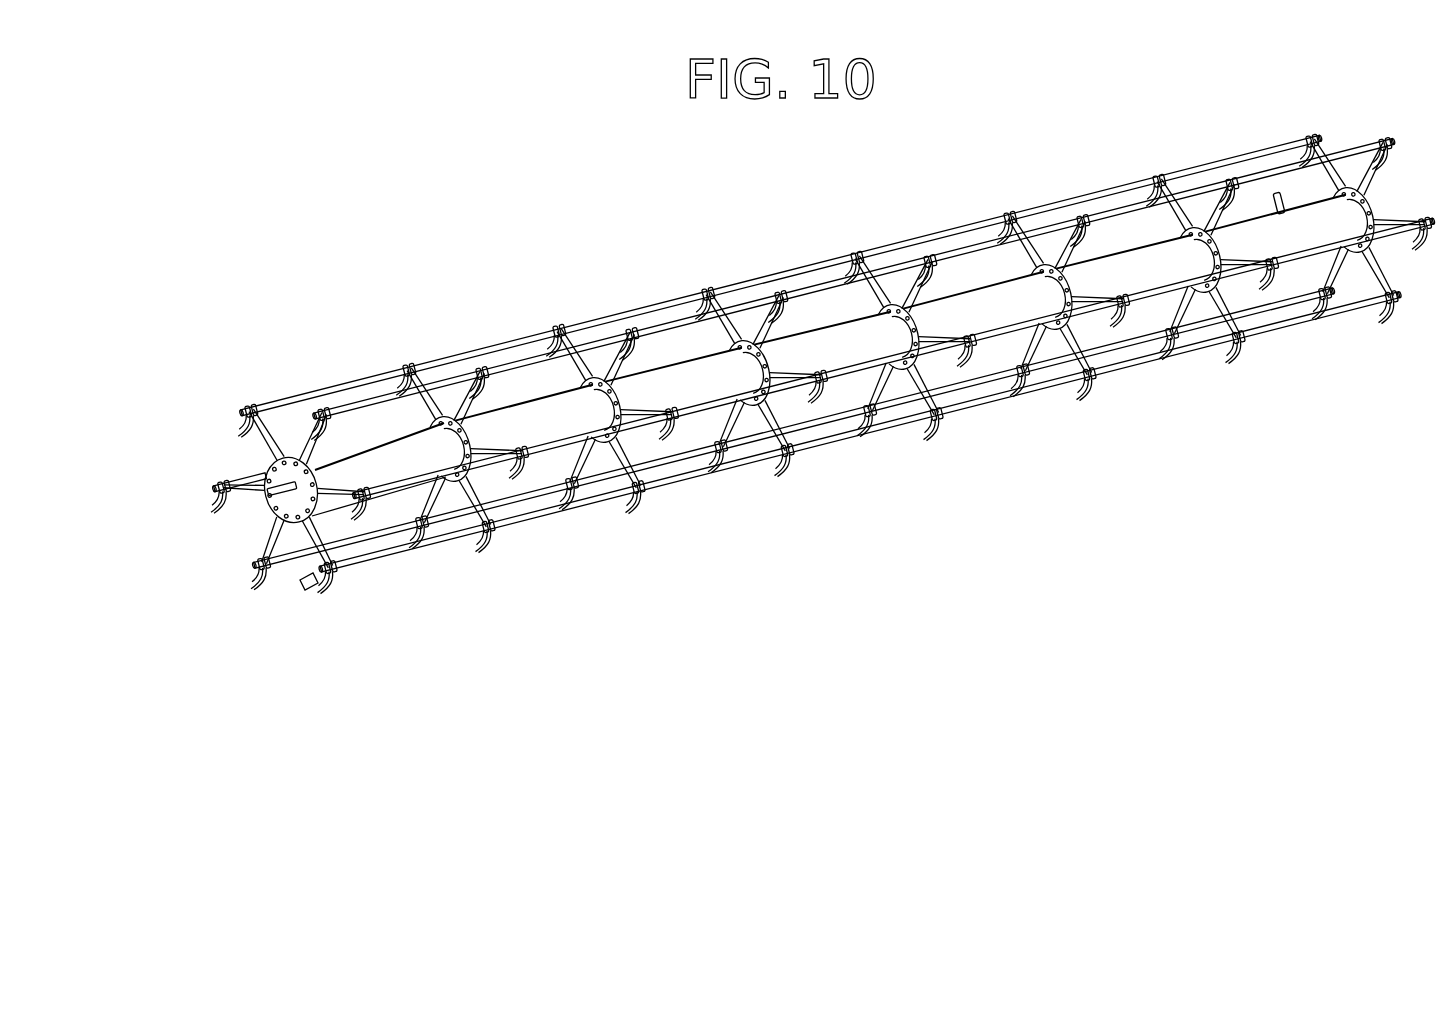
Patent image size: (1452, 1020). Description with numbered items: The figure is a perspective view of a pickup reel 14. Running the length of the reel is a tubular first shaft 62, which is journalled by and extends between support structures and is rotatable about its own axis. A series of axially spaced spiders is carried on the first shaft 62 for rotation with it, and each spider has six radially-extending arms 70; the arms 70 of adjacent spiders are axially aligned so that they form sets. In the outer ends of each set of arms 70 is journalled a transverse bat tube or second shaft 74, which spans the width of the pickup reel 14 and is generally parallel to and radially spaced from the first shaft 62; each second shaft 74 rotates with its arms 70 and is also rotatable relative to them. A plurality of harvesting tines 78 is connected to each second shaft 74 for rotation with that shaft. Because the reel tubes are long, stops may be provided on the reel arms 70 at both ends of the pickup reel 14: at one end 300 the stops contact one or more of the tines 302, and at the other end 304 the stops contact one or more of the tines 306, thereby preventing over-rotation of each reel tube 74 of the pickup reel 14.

The pickup reel 14 is at (798, 391).
The first shaft 62 is at (290, 495).
The radially-extending arms 70 is at (315, 440).
The second shaft 74 is at (490, 350).
The harvesting tines 78 is at (324, 574).
The end of the pickup reel 300 is at (272, 592).
The tines 302 is at (203, 490).
The end of the pickup reel 304 is at (1397, 187).
The tines 306 is at (1420, 258).